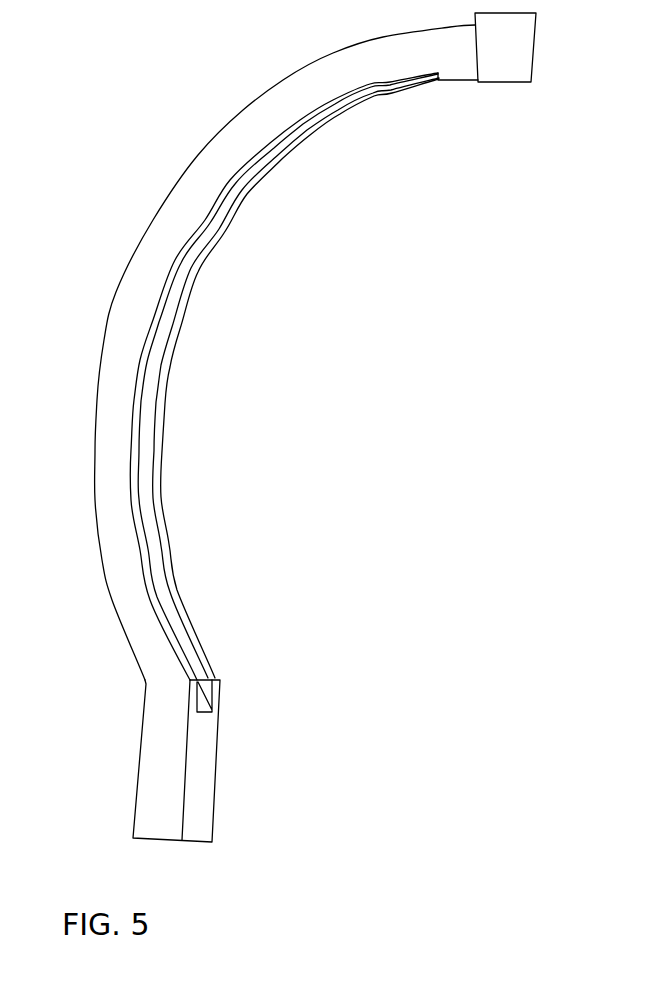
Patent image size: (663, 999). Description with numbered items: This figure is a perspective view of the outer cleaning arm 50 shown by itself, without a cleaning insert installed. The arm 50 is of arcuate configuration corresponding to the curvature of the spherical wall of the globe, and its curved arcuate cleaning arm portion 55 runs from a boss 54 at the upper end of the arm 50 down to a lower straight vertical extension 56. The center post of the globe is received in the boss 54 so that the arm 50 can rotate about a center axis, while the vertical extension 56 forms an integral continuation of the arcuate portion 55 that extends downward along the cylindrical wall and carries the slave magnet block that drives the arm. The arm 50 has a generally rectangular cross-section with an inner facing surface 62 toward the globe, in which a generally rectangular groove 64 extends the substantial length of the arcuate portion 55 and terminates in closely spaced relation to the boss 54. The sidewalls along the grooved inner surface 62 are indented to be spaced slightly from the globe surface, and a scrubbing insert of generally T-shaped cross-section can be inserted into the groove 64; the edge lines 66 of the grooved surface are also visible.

The outer cleaning arm 50 is at (98, 300).
The boss 54 is at (536, 22).
The arcuate cleaning arm portion 55 is at (213, 168).
The lower straight vertical extension 56 is at (148, 760).
The inner facing surface 62 is at (163, 514).
The generally rectangular groove 64 is at (145, 435).
The strap edge grooves 66 is at (147, 325).